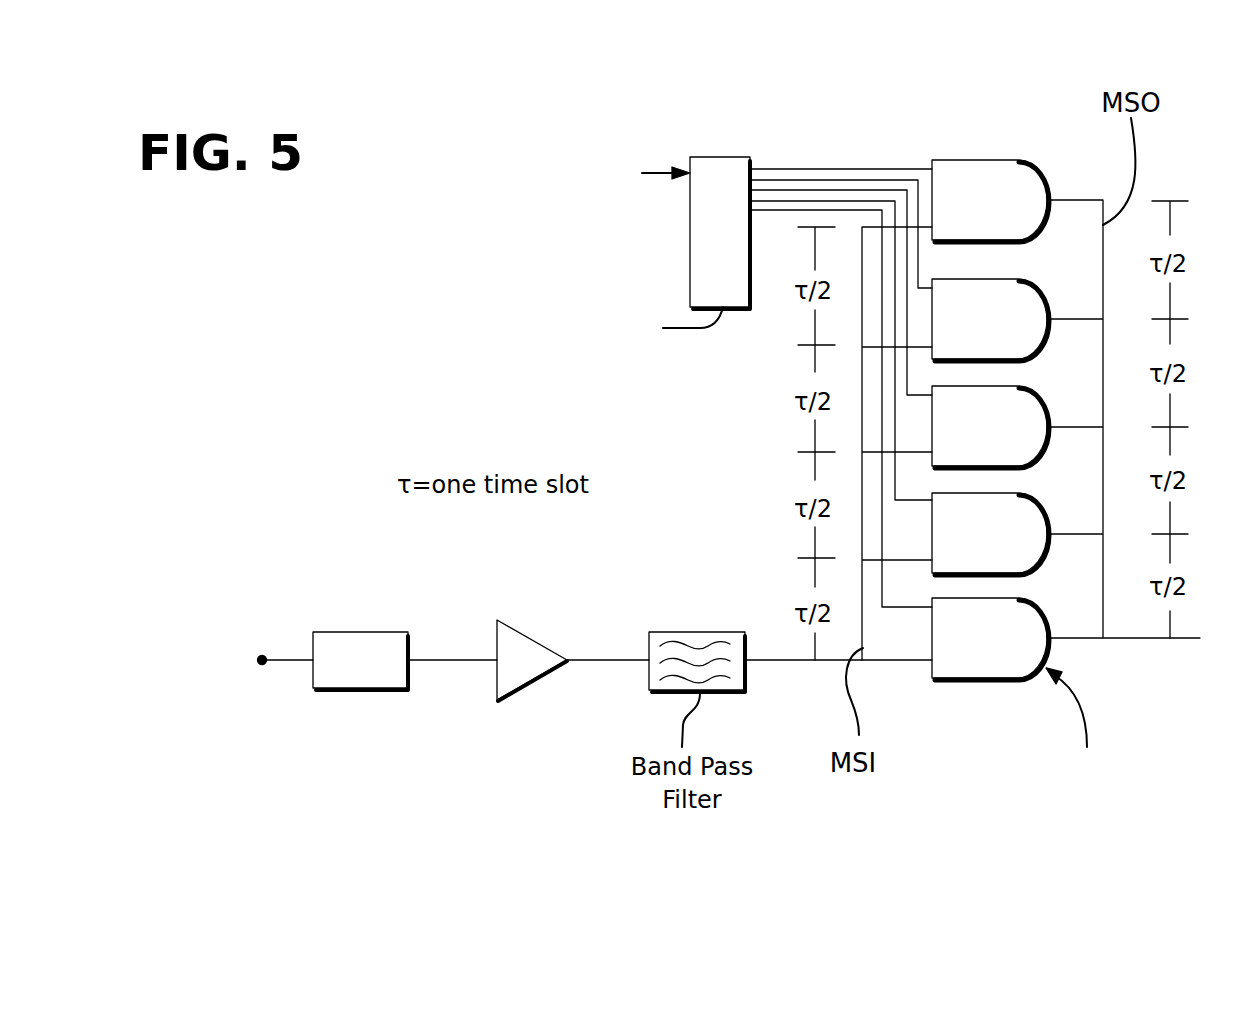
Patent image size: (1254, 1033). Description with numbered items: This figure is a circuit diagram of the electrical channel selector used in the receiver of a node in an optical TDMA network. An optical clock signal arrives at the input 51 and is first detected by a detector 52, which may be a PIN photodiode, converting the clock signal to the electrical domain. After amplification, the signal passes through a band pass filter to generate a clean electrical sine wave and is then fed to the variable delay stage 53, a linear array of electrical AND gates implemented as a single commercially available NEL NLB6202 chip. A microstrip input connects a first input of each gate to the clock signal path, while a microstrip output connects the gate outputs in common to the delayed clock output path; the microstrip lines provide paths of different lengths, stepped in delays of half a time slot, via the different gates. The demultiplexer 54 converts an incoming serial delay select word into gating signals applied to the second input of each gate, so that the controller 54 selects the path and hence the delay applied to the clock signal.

The input 51 is at (266, 663).
The detector 52 is at (370, 690).
The variable delay stage 53 is at (930, 133).
The demultiplexer 54 is at (719, 157).